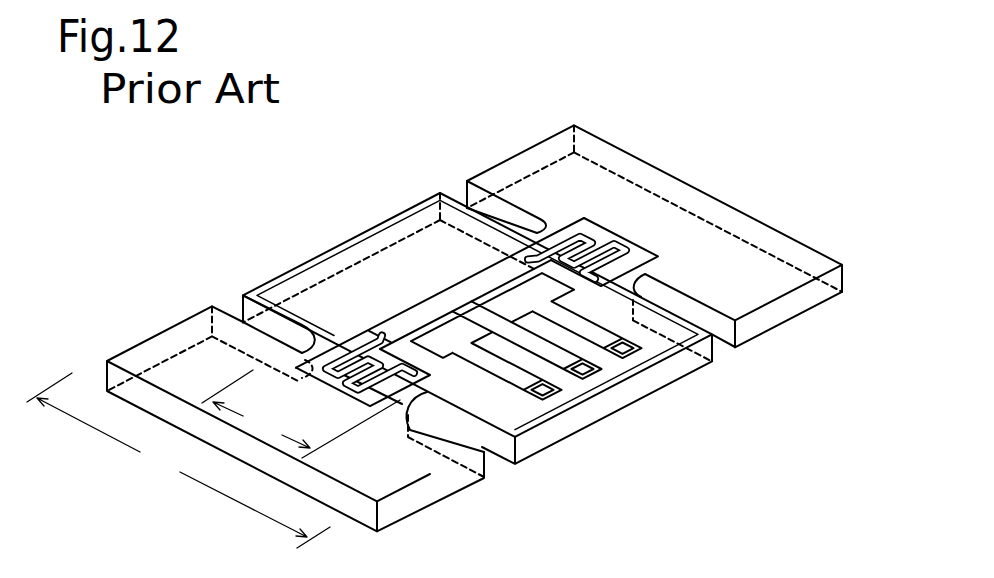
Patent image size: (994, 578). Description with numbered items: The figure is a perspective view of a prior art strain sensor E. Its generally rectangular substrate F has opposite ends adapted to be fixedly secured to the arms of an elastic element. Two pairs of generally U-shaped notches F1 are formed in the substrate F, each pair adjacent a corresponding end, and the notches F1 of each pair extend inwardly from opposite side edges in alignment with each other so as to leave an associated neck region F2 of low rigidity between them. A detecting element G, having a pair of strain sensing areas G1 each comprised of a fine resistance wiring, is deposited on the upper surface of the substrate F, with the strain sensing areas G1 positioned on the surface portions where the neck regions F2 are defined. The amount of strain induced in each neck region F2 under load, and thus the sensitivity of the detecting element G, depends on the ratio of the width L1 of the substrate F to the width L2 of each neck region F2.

The strain sensor E is at (655, 143).
The substrate F is at (672, 227).
The U-shaped notches F1 is at (458, 194).
The neck region F2 is at (613, 230).
The detecting element G is at (441, 284).
The strain sensing areas G1 is at (568, 243).
The width of the substrate L1 is at (178, 460).
The width of the neck region L2 is at (301, 414).